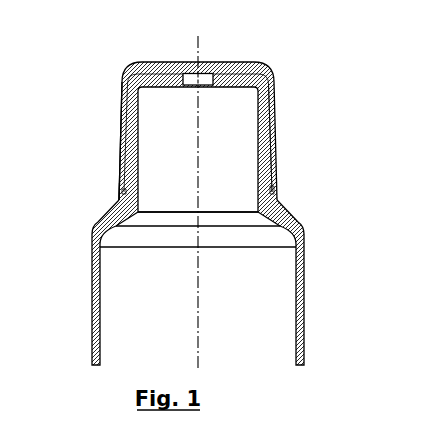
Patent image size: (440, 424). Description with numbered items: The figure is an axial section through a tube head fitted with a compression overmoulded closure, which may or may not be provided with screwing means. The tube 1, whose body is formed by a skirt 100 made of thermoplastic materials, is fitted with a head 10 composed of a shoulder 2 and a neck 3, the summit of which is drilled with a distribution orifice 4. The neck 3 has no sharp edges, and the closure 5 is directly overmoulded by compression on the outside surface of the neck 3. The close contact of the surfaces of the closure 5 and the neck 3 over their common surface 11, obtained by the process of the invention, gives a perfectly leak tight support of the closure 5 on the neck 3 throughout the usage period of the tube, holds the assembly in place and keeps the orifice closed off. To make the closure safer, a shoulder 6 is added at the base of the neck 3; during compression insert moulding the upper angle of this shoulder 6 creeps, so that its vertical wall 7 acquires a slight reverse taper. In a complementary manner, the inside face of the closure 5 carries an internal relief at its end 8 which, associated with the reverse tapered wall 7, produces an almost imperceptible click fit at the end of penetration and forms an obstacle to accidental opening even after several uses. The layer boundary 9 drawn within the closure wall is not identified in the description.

The tube 1 is at (323, 353).
The skirt 100 is at (298, 298).
The shoulder 2 is at (283, 205).
The neck 3 is at (262, 117).
The distribution orifice 4 is at (198, 70).
The closure 5 is at (113, 125).
The shoulder 6 is at (112, 178).
The vertical wall 7 is at (114, 184).
The end 8 is at (267, 186).
The inner layer of cap 9 is at (271, 134).
The head 10 is at (100, 204).
The common surface 11 is at (268, 80).